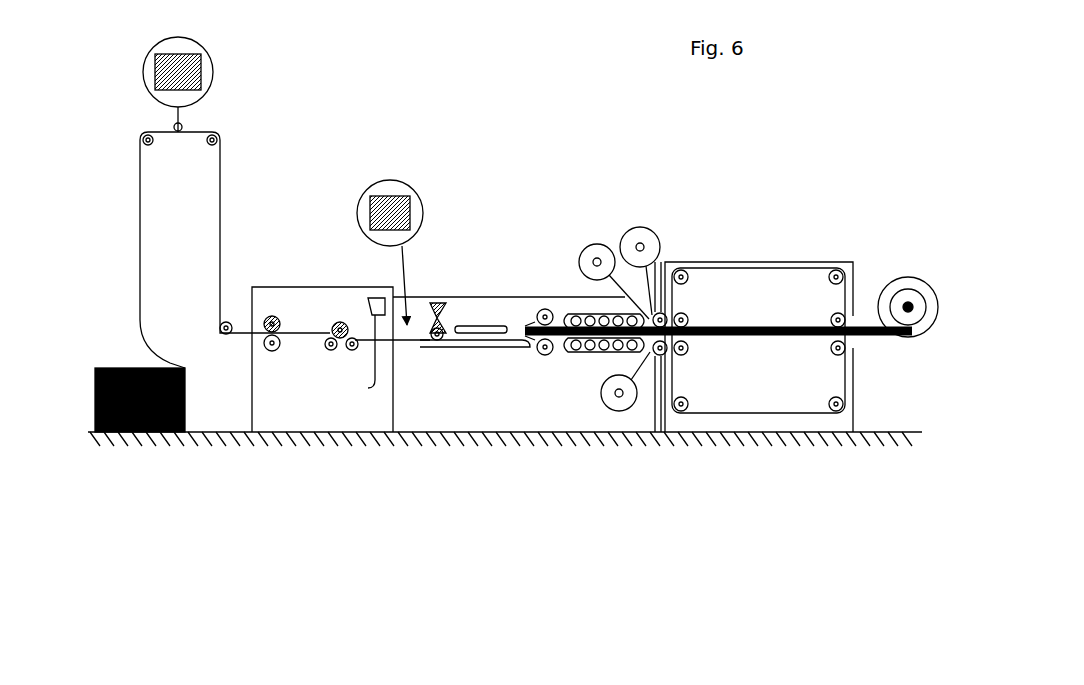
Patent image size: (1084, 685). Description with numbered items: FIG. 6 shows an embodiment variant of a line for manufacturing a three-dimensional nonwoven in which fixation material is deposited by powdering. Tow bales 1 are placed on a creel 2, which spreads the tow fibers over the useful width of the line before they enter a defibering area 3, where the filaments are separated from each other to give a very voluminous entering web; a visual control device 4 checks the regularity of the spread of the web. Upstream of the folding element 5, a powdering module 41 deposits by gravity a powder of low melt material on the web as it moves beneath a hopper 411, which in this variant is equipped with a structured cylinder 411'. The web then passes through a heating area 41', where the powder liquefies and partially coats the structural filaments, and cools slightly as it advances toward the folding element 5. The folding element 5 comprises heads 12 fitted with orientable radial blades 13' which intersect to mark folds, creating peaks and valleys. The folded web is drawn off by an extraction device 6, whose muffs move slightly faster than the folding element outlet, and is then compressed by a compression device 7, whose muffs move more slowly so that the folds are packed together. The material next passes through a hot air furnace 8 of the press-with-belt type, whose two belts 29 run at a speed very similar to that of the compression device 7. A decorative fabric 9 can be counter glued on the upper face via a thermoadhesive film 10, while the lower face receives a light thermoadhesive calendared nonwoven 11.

The two-component tow bale 1 is at (140, 228).
The creel 2 is at (232, 126).
The defibering area 3 is at (313, 262).
The visual control device 4 is at (362, 363).
The powdering module 41 is at (401, 213).
The hopper 411 is at (469, 248).
The structured cylinder 411' is at (402, 415).
The heating area 41' is at (487, 283).
The folding element 5 is at (551, 284).
The orientable radial blades 13' is at (475, 441).
The head 12 is at (532, 334).
The extraction device 6 is at (583, 363).
The compression device 7 is at (608, 362).
The thermoadhesive film 10 is at (596, 244).
The decorative fabric 9 is at (641, 227).
The light thermoadhesive calendared nonwoven 11 is at (630, 407).
The hot air furnace 8 is at (720, 243).
The belt 29 is at (757, 262).